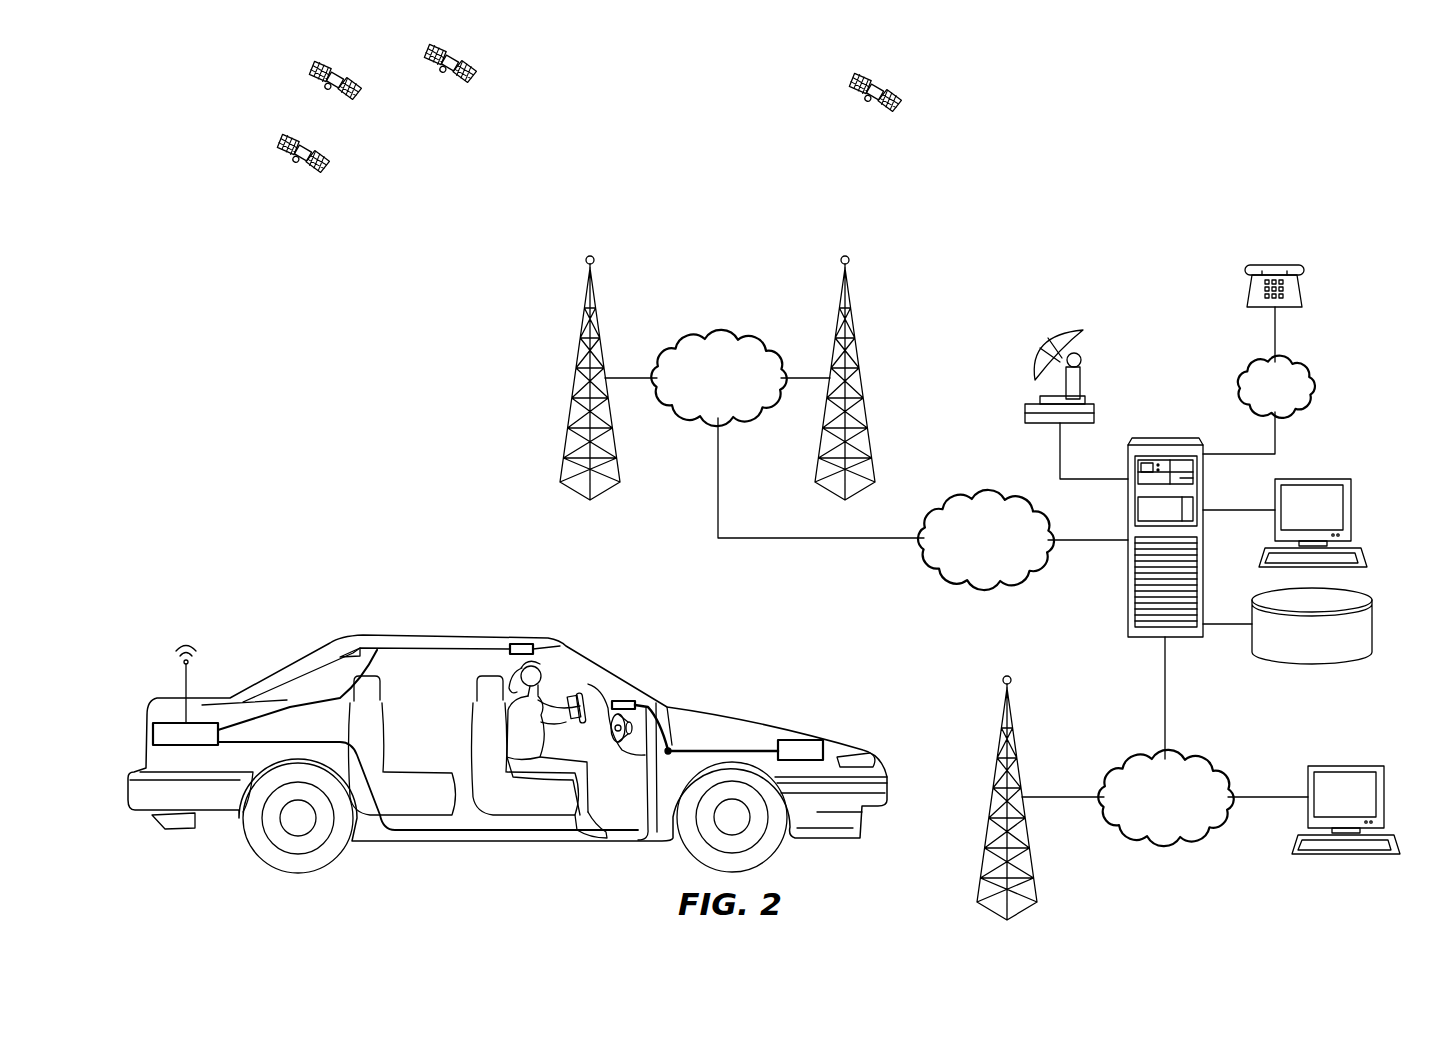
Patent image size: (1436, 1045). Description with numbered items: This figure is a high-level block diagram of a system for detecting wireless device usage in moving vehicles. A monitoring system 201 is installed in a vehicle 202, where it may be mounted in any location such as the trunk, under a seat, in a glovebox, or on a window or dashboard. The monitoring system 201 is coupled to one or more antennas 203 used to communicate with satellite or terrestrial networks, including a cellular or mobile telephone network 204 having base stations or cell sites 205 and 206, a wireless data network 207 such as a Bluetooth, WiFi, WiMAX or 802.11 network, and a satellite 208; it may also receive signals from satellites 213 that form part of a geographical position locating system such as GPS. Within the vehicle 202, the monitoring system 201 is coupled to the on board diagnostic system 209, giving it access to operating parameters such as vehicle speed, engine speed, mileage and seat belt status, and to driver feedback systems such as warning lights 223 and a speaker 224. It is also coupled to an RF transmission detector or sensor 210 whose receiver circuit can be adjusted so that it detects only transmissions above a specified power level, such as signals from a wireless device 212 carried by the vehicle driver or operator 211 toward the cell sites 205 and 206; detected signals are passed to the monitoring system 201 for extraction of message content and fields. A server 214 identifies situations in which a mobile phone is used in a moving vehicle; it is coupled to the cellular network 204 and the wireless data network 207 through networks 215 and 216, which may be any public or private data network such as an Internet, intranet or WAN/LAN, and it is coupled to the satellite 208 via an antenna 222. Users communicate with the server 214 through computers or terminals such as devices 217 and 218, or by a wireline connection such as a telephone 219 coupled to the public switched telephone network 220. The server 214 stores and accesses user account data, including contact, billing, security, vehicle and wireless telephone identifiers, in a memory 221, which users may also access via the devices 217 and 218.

The monitoring system 201 is at (153, 733).
The vehicle 202 is at (375, 850).
The antennas 203 is at (183, 680).
The cellular or mobile telephone network 204 is at (712, 328).
The base station or cell site 205 is at (576, 370).
The base station or cell site 206 is at (860, 372).
The wireless data network 207 is at (990, 788).
The satellite 208 is at (862, 97).
The on board diagnostic system 209 is at (812, 740).
The RF transmission detector or sensor 210 is at (540, 644).
The vehicle driver or operator 211 is at (545, 667).
The wireless device 212 is at (583, 690).
The satellites 213 is at (322, 92).
The server 214 is at (1168, 438).
The network 215 is at (970, 490).
The network 216 is at (1198, 850).
The device 217 is at (1333, 479).
The device 218 is at (1368, 766).
The telephone 219 is at (1305, 303).
The public switched telephone network 220 is at (1322, 375).
The memory 221 is at (1372, 628).
The antenna 222 is at (1088, 358).
The warning lights 223 is at (625, 701).
The speaker 224 is at (624, 745).